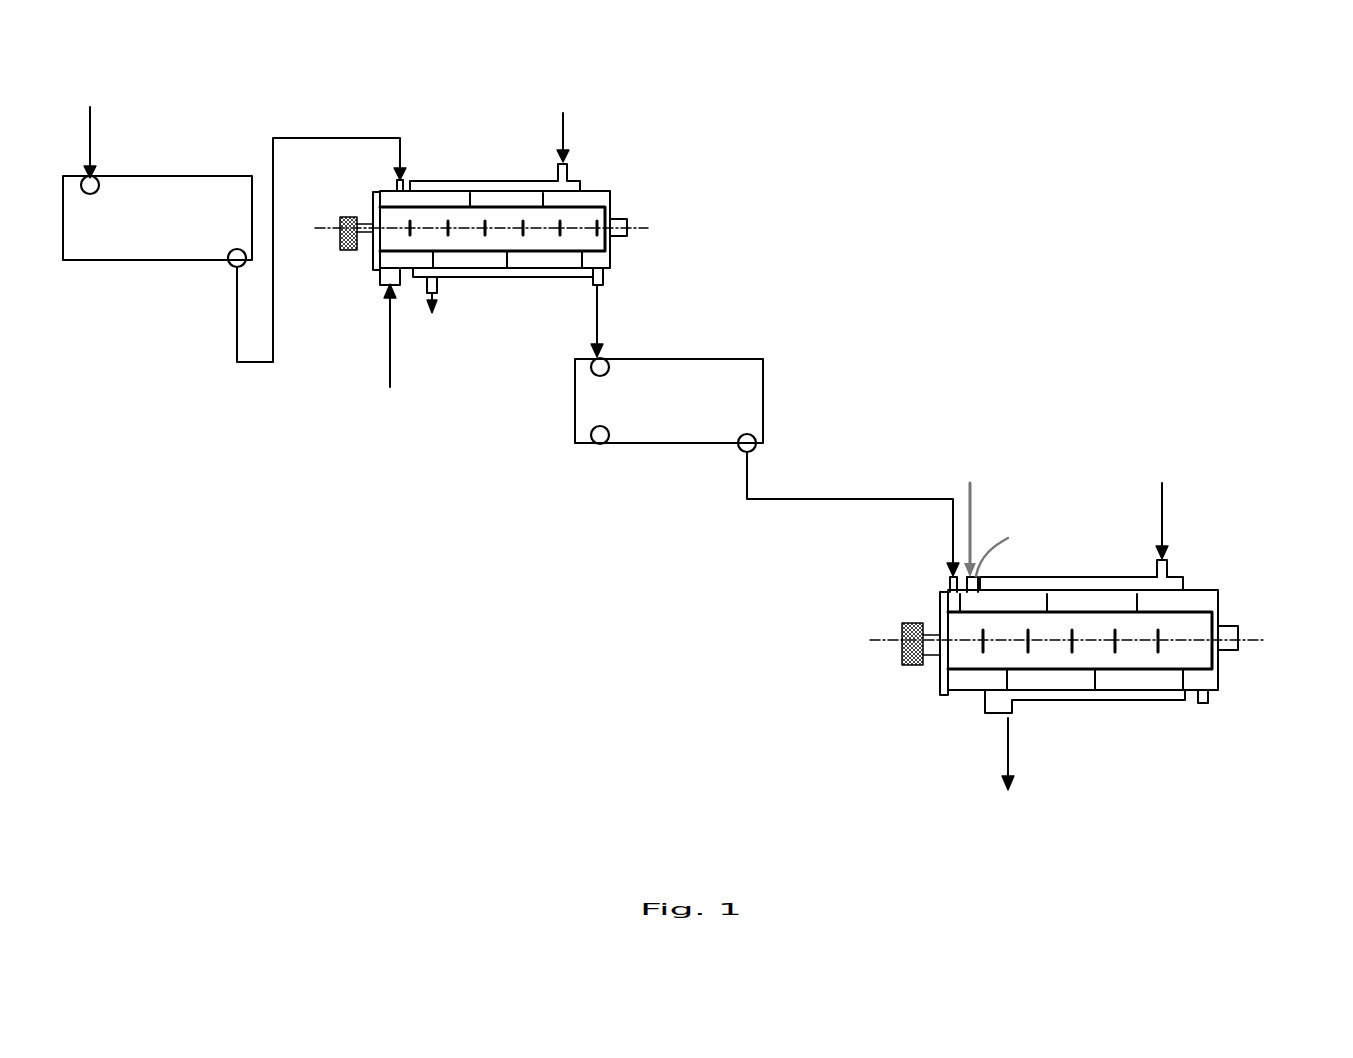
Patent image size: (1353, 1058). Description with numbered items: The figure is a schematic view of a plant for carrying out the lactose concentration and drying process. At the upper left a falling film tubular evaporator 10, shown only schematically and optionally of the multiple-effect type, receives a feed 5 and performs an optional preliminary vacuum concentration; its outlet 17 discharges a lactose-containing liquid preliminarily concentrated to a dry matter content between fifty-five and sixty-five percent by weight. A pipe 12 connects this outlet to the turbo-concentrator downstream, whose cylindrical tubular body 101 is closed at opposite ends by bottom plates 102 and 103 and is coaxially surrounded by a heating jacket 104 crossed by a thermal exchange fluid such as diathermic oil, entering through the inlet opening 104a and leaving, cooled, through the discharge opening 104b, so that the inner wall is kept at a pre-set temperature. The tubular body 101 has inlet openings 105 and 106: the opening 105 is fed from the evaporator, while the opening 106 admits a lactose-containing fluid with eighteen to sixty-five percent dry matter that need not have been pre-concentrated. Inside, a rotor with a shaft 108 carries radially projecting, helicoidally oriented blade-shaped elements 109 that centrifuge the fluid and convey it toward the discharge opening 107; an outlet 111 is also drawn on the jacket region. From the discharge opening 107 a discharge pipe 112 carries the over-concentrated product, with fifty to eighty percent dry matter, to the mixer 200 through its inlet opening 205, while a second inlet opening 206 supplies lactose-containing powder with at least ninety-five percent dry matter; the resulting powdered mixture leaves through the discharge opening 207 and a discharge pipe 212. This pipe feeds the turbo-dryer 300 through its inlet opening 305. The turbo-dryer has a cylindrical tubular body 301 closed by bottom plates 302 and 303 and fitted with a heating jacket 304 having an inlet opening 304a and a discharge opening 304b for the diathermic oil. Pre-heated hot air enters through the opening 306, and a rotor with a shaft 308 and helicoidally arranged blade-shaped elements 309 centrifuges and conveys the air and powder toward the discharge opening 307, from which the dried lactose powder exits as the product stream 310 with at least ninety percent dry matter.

The feed inlet 5 is at (97, 178).
The falling film tubular evaporator 10 is at (103, 262).
The pipe 12 is at (345, 133).
The outlet 17 is at (238, 270).
The cylindrical tubular body 101 is at (493, 180).
The bottom plate 102 is at (372, 250).
The bottom plate 103 is at (612, 207).
The heating jacket 104 is at (507, 257).
The inlet opening 104a is at (568, 157).
The discharge opening 104b is at (433, 314).
The inlet opening 105 is at (350, 181).
The inlet opening 106 is at (382, 278).
The discharge opening 107 is at (604, 270).
The shaft 108 is at (598, 236).
The blade-shaped elements 109 is at (463, 197).
The outlet 111 is at (590, 273).
The discharge pipe 112 is at (612, 321).
The mixer 200 is at (572, 418).
The inlet opening 205 is at (577, 357).
The inlet opening 206 is at (602, 446).
The discharge opening 207 is at (765, 442).
The discharge pipe 212 is at (812, 500).
The turbo-dryer 300 is at (1220, 578).
The cylindrical tubular body 301 is at (1012, 592).
The bottom plate 302 is at (922, 673).
The bottom plate 303 is at (1230, 615).
The heating jacket 304 is at (1070, 577).
The inlet opening 304a is at (1170, 562).
The discharge opening 304b is at (1002, 720).
The inlet opening 305 is at (947, 577).
The opening 306 is at (960, 522).
The discharge opening 307 is at (1200, 712).
The shaft 308 is at (952, 623).
The blade-shaped elements 309 is at (1008, 677).
The product outlet 310 is at (999, 792).